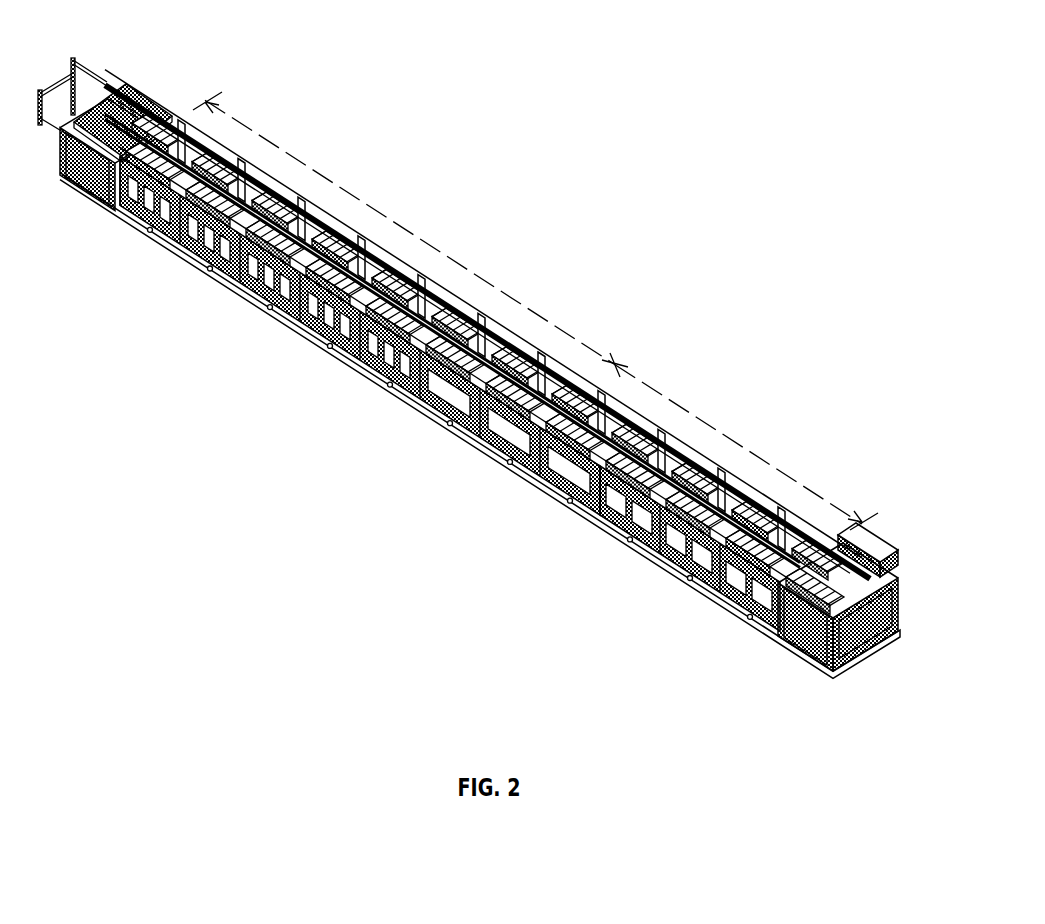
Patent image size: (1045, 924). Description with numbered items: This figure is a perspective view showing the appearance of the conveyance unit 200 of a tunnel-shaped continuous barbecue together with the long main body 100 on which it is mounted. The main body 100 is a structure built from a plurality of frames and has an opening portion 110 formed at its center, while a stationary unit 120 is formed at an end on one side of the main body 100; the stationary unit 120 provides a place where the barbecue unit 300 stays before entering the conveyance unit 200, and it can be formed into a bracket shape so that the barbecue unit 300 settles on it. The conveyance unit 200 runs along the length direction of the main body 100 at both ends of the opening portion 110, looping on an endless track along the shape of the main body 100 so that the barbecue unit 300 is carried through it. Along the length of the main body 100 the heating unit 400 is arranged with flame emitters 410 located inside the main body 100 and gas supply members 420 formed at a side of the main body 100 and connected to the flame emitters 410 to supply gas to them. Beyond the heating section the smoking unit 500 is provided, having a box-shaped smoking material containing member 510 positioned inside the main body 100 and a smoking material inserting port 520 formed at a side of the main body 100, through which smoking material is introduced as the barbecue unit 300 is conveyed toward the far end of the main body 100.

The main body 100 is at (248, 322).
The opening portion 110 is at (257, 185).
The stationary unit 120 is at (130, 112).
The conveyance unit 200 is at (790, 530).
The barbecue unit 300 is at (163, 108).
The heating unit 400 is at (410, 234).
The flame emitters 410 is at (268, 213).
The gas supply members 420 is at (455, 400).
The smoking unit 500 is at (746, 447).
The smoking material containing member 510 is at (807, 558).
The smoking material inserting port 520 is at (567, 497).